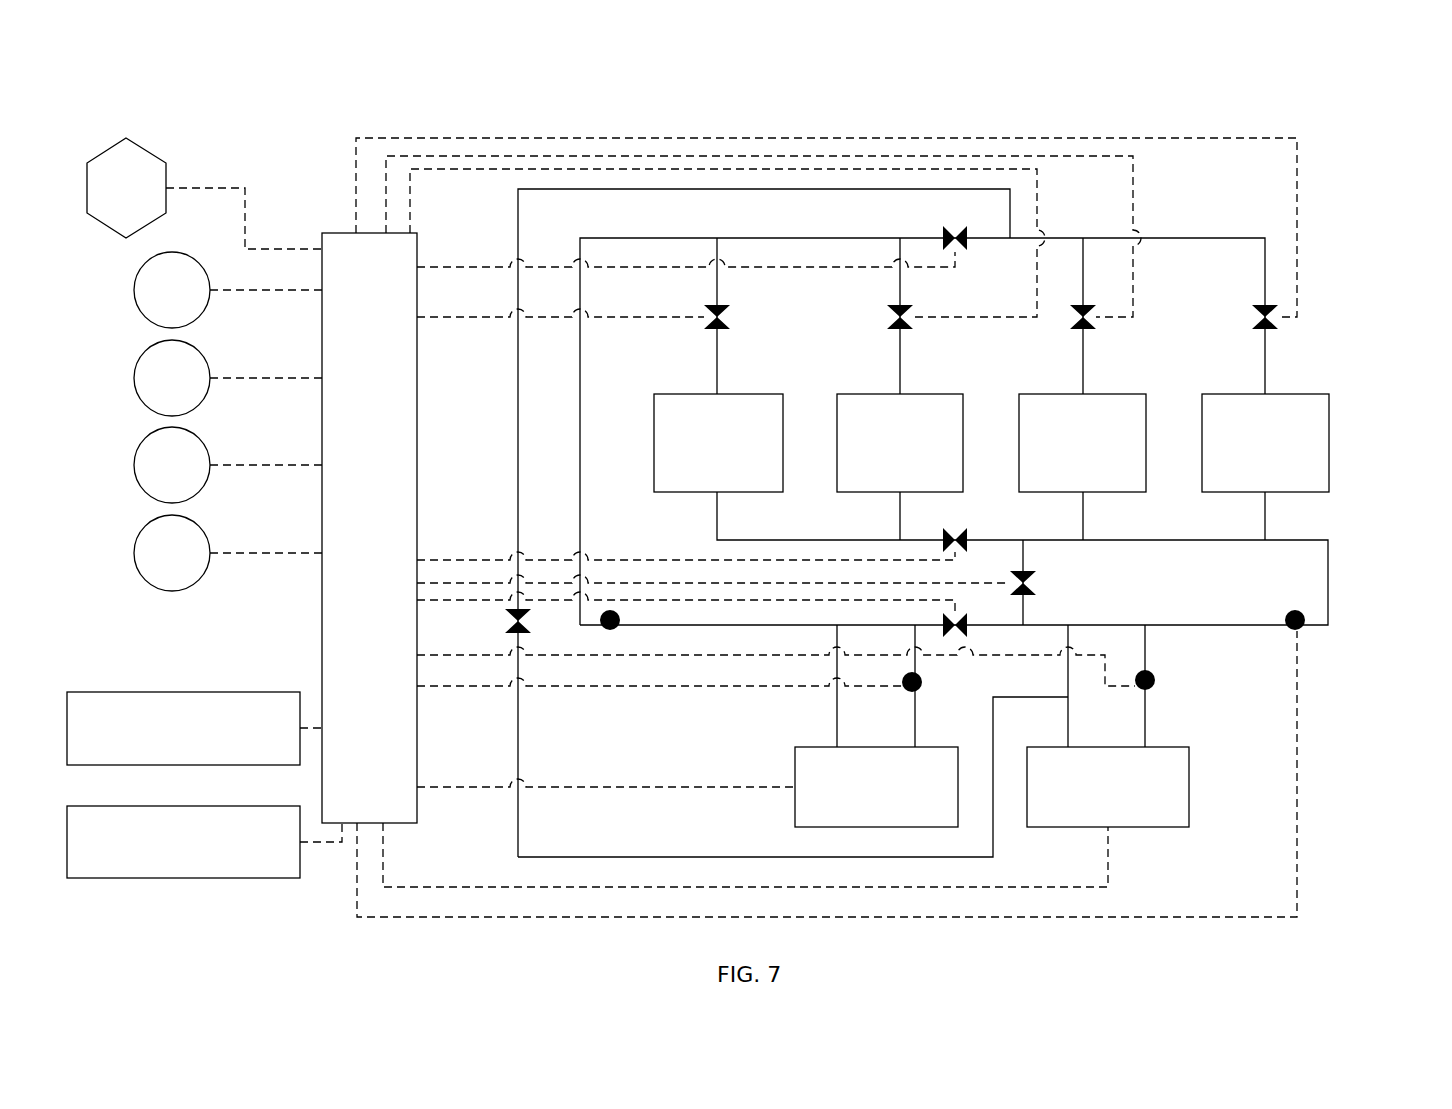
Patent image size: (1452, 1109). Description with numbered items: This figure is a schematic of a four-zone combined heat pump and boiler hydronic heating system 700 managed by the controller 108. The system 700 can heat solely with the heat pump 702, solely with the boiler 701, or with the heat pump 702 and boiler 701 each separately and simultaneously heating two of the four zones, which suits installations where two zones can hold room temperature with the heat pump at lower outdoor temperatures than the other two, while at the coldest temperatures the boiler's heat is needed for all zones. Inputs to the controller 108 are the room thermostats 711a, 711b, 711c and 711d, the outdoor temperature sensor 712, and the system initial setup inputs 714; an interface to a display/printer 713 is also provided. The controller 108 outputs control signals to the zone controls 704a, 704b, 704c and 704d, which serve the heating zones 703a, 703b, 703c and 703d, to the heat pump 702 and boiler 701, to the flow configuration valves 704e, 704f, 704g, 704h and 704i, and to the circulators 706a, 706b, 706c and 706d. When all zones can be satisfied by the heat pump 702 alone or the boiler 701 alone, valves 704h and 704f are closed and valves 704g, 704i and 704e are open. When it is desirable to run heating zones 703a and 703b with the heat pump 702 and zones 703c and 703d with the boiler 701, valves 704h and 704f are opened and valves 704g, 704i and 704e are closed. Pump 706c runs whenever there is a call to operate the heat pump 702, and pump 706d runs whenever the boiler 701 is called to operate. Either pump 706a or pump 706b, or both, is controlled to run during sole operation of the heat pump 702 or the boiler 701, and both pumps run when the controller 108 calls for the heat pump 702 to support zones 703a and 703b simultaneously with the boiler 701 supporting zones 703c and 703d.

The combined heat pump and boiler hydronic heating system 700 is at (1322, 121).
The controller 108 is at (400, 483).
The outdoor temperature sensor 712 is at (108, 212).
The room thermostat 711a is at (146, 311).
The room thermostat 711b is at (146, 399).
The room thermostat 711c is at (146, 486).
The room thermostat 711d is at (146, 574).
The display/printer 713 is at (165, 751).
The setup inputs 714 is at (165, 865).
The heating zone 703a is at (694, 485).
The heating zone 703b is at (876, 485).
The heating zone 703c is at (1059, 485).
The heating zone 703d is at (1242, 485).
The zone control 704a is at (728, 322).
The zone control 704b is at (912, 322).
The zone control 704c is at (1095, 322).
The zone control 704d is at (1277, 322).
The flow configuration valve 704e is at (945, 230).
The flow configuration valve 704f is at (1036, 582).
The flow configuration valve 704g is at (950, 637).
The flow configuration valve 704h is at (510, 621).
The flow configuration valve 704i is at (1022, 520).
The circulator pump 706a is at (615, 630).
The circulator pump 706b is at (1303, 628).
The circulator pump 706c is at (905, 692).
The circulator pump 706d is at (1155, 680).
The heat pump 702 is at (858, 811).
The boiler 701 is at (1090, 811).